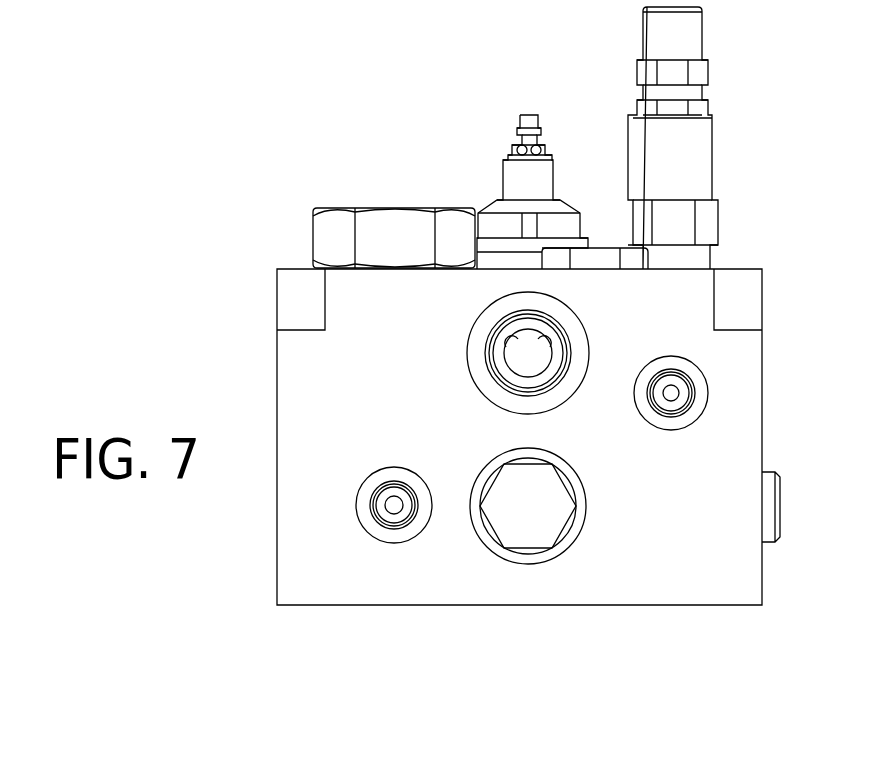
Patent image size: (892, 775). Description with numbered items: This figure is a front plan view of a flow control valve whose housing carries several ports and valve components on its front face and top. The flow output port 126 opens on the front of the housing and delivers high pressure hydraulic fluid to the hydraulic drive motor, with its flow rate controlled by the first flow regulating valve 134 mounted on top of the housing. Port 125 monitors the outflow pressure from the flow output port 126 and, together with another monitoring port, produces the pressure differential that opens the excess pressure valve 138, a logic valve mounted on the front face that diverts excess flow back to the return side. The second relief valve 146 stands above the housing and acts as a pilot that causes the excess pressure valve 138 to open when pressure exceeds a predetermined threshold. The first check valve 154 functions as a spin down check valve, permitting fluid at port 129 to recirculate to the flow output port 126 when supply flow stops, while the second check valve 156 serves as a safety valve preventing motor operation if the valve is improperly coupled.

The port 125 is at (687, 410).
The flow output port 126 is at (497, 332).
The port 129 is at (380, 517).
The first flow regulating valve 134 is at (495, 205).
The excess pressure valve 138 is at (503, 548).
The second relief valve 146 is at (705, 143).
The first check valve 154 is at (608, 253).
The second check valve 156 is at (395, 220).